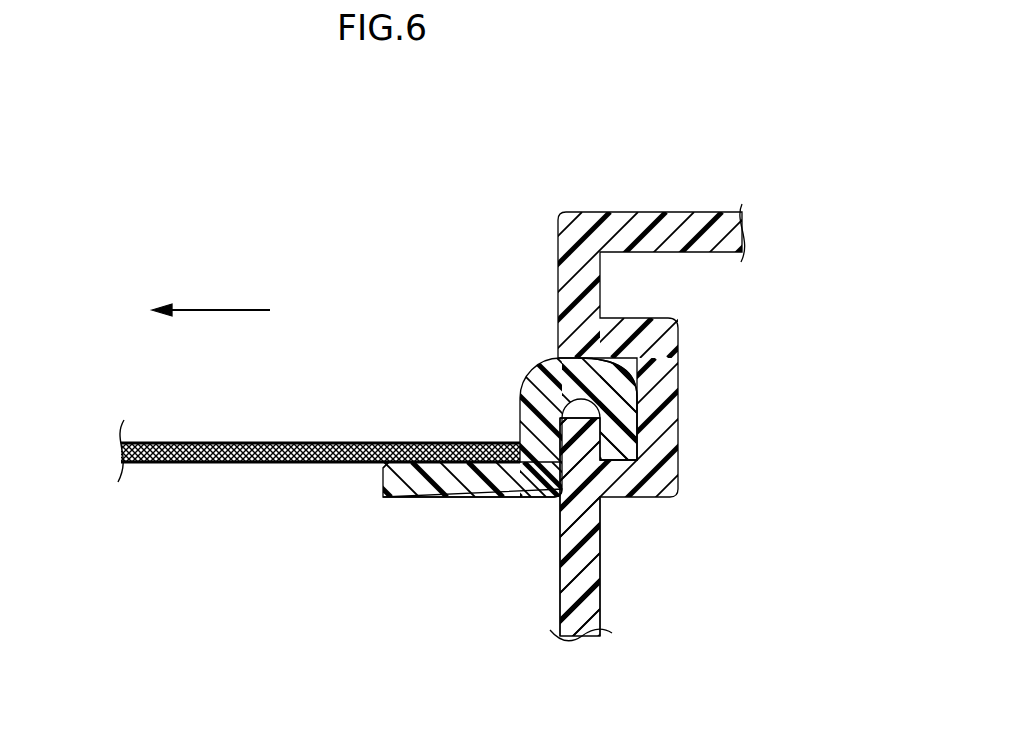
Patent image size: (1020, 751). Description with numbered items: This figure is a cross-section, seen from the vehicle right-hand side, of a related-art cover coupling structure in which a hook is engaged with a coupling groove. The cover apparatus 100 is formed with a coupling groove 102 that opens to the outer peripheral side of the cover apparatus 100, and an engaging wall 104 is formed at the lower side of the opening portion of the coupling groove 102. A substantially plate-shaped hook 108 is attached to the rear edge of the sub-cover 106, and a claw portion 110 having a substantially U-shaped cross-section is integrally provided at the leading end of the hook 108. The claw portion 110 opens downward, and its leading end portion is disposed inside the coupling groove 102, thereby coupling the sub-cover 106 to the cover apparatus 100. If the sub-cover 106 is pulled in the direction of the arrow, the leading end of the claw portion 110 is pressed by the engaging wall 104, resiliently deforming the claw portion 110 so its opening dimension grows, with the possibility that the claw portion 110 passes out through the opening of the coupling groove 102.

The cover apparatus 100 is at (675, 204).
The coupling groove 102 is at (632, 368).
The engaging wall 104 is at (576, 470).
The sub-cover 106 is at (255, 443).
The hook 108 is at (428, 499).
The claw portion 110 is at (528, 386).